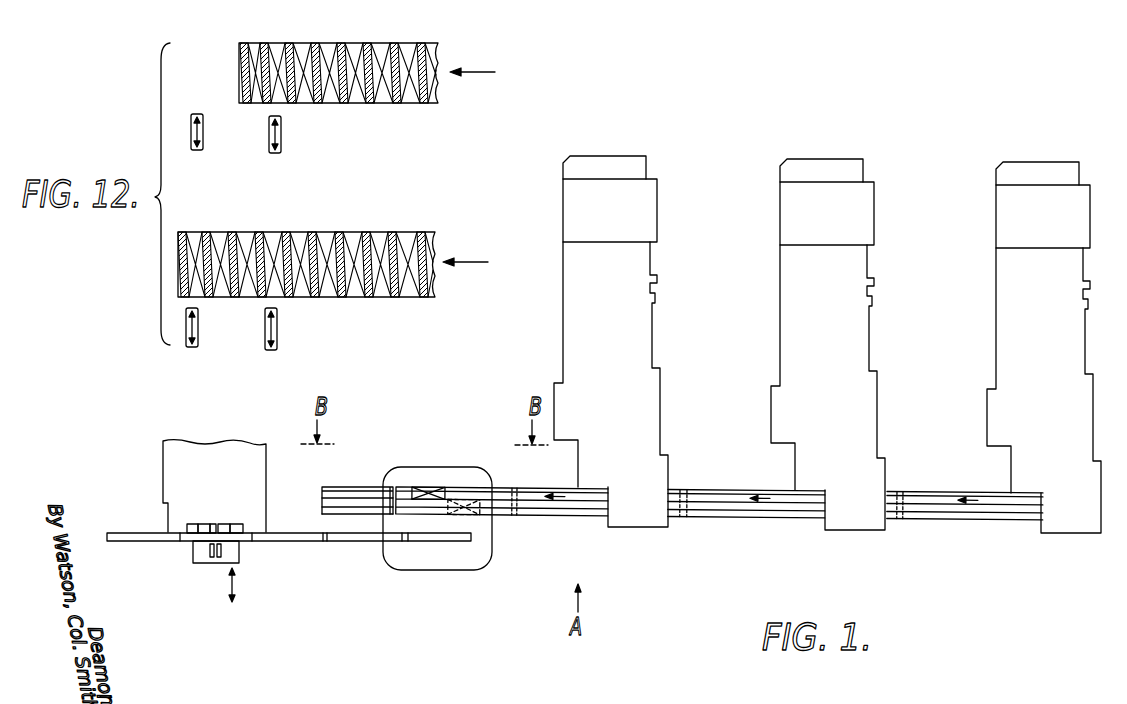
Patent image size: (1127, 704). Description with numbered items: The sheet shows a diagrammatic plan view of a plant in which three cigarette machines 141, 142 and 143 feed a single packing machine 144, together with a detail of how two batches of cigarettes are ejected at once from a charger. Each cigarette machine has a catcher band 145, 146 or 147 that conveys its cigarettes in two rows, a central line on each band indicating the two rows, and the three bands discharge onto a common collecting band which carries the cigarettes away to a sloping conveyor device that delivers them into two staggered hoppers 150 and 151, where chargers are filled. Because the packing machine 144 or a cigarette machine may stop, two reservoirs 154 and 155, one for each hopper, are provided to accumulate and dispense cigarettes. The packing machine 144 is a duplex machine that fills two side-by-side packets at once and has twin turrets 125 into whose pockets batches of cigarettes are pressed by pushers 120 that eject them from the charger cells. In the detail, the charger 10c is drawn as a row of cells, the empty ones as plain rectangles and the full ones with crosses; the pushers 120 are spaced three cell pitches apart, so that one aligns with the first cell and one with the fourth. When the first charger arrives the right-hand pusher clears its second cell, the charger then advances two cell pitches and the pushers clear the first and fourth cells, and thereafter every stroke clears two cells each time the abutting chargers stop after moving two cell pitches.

In FIG. 12, the strip of hatched web material 10c is at (380, 43).
In FIG. 12, the pushers 120 is at (269, 146).
In FIG. 1, the pushers 120 is at (222, 562).
In FIG. 1, the twin turrets 125 is at (232, 525).
In FIG. 1, the cigarette machine 141 is at (572, 303).
In FIG. 1, the cigarette machine 142 is at (790, 305).
In FIG. 1, the cigarette machine 143 is at (1012, 308).
In FIG. 1, the packing machine 144 is at (215, 452).
In FIG. 1, the catcher band 145 is at (566, 509).
In FIG. 1, the catcher band 146 is at (765, 512).
In FIG. 1, the catcher band 147 is at (984, 514).
In FIG. 1, the hopper 150 is at (497, 462).
In FIG. 1, the hopper 151 is at (428, 487).
In FIG. 1, the reservoir 154 is at (330, 505).
In FIG. 1, the reservoir 155 is at (328, 493).